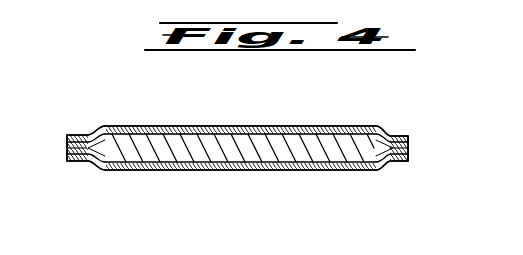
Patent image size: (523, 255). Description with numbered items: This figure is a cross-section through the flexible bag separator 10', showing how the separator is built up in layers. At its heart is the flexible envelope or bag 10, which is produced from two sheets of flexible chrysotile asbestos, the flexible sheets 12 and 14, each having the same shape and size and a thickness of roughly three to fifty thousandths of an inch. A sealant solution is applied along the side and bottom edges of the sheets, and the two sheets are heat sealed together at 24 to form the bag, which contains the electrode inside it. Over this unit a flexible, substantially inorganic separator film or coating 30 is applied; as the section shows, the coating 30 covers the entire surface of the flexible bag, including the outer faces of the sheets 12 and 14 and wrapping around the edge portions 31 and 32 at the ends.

The flexible bag separator 10' is at (237, 129).
The flexible envelope or bag 10 is at (238, 130).
The flexible sheet 12 is at (151, 128).
The flexible sheet 14 is at (300, 171).
The heat seal 24 is at (86, 161).
The separator film or coating 30 is at (68, 133).
The edge portion 31 is at (410, 145).
The edge portion 32 is at (66, 150).